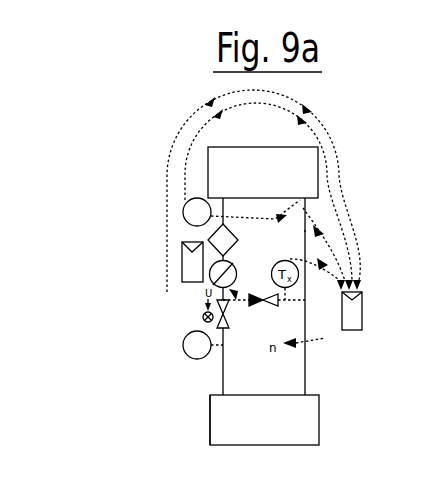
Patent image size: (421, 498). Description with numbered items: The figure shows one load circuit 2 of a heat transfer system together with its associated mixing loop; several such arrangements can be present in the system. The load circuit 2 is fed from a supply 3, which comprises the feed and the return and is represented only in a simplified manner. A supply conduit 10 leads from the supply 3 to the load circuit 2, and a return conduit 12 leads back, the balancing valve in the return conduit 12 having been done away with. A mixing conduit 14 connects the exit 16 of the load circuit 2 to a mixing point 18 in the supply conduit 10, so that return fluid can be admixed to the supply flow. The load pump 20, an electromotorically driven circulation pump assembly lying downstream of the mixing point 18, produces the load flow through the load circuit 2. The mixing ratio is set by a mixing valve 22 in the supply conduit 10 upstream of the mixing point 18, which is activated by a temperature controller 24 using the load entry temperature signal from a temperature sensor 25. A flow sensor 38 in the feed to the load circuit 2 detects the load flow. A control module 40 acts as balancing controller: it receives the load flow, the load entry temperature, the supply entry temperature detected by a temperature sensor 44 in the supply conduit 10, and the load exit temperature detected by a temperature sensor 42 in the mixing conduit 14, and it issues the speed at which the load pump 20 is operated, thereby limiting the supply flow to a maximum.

The load circuit 2 is at (263, 172).
The supply 3 is at (264, 420).
The supply conduit 10 is at (210, 396).
The return conduit 12 is at (305, 388).
The mixing conduit 14 is at (268, 305).
The exit 16 is at (305, 198).
The mixing point 18 is at (190, 304).
The load pump 20 is at (213, 285).
The mixing valve 22 is at (245, 303).
The temperature controller 24 is at (182, 266).
The temperature sensor 25 is at (186, 200).
The flow sensor 38 is at (238, 240).
The control module 40 is at (362, 316).
The temperature sensor 42 is at (358, 284).
The temperature sensor 44 is at (192, 358).